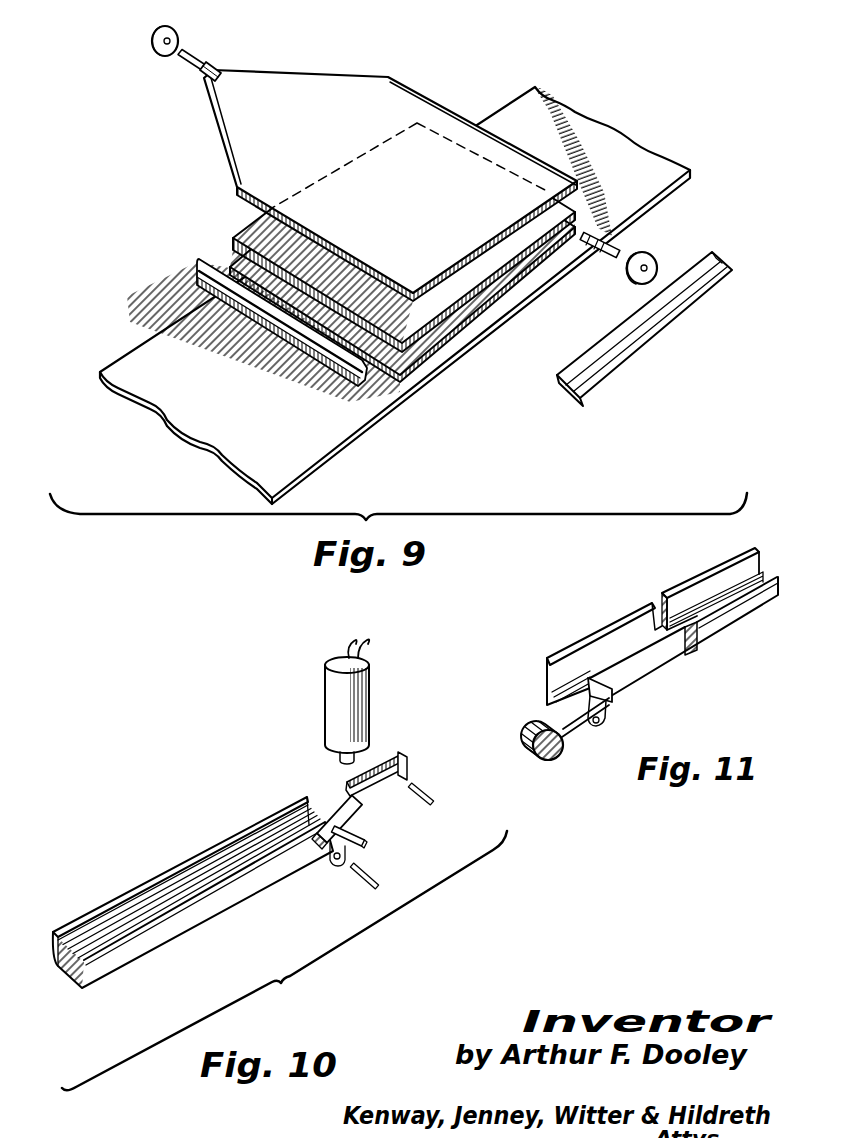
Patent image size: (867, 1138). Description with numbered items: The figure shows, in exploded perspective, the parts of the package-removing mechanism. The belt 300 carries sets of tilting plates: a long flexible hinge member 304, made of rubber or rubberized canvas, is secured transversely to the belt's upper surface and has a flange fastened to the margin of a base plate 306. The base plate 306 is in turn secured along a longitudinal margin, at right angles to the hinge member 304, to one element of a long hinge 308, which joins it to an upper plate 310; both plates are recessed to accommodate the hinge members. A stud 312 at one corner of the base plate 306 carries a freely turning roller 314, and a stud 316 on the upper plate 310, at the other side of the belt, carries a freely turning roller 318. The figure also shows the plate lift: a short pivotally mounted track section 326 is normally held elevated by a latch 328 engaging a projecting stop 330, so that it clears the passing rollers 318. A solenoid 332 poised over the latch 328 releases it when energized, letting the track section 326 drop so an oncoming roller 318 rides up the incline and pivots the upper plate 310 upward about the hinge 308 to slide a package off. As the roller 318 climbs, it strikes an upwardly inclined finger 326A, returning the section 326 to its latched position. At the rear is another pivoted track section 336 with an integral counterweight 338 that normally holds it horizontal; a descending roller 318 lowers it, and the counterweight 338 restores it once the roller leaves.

In FIG. 9, the belt 300 is at (132, 357).
In FIG. 9, the flexible hinge member 304 is at (200, 278).
In FIG. 9, the base plate 306 is at (262, 229).
In FIG. 9, the long hinge 308 is at (645, 340).
In FIG. 9, the upper plate 310 is at (240, 142).
In FIG. 9, the stud 312 is at (618, 246).
In FIG. 9, the roller 314 is at (628, 279).
In FIG. 9, the stud 316 is at (190, 52).
In FIG. 9, the roller 318 is at (152, 55).
In FIG. 10, the pivotally mounted track section 326 is at (212, 850).
In FIG. 10, the upwardly inclined finger 326A is at (345, 800).
In FIG. 10, the latch 328 is at (385, 768).
In FIG. 10, the projecting stop 330 is at (365, 832).
In FIG. 10, the solenoid 332 is at (326, 692).
In FIG. 11, the pivoted track section 336 is at (690, 592).
In FIG. 11, the counterweight 338 is at (540, 760).